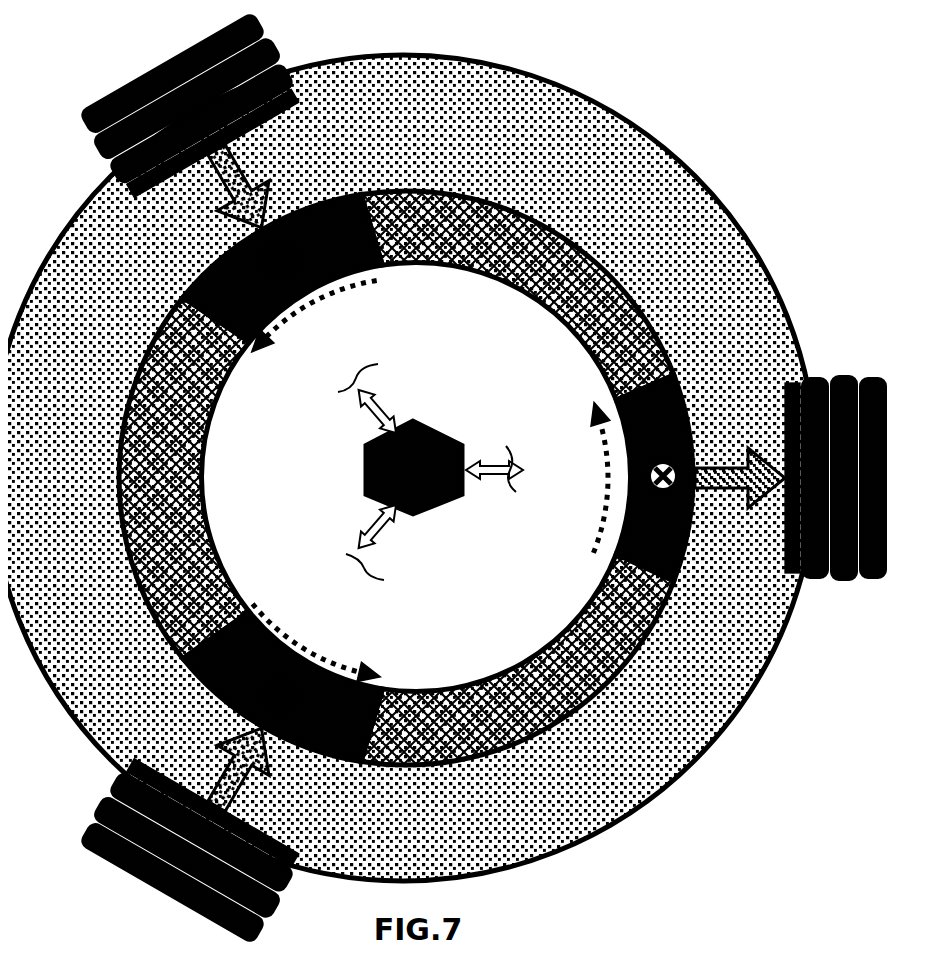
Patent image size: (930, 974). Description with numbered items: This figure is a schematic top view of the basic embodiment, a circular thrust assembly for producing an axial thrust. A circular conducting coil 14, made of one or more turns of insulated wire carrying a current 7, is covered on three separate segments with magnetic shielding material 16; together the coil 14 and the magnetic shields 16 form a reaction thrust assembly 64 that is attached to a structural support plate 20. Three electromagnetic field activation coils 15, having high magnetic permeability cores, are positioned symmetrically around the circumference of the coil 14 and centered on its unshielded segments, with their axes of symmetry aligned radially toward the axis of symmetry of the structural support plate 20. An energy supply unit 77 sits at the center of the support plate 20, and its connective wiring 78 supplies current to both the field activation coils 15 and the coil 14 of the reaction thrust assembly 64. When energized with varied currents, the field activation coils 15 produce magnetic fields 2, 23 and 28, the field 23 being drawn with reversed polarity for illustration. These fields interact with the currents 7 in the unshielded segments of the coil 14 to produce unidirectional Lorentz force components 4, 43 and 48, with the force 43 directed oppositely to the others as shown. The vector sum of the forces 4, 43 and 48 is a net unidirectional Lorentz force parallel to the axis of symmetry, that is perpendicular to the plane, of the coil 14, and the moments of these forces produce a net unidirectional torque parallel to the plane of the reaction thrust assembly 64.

The structural support plate 20 is at (583, 78).
The reaction thrust assembly 64 is at (552, 206).
The electromagnetic field activation coils 15 is at (772, 362).
The magnetic field 2 is at (238, 178).
The circular conducting coil 14 is at (246, 262).
The Lorentz Force component 4 is at (300, 270).
The current 7 is at (274, 330).
The connective wiring 78 is at (382, 390).
The energy supply unit 77 is at (358, 456).
The Lorentz Force component 43 is at (628, 478).
The magnetic field 23 is at (712, 482).
The magnetic shielding material 16 is at (106, 576).
The Lorentz Force component 48 is at (284, 650).
The magnetic field 28 is at (242, 776).